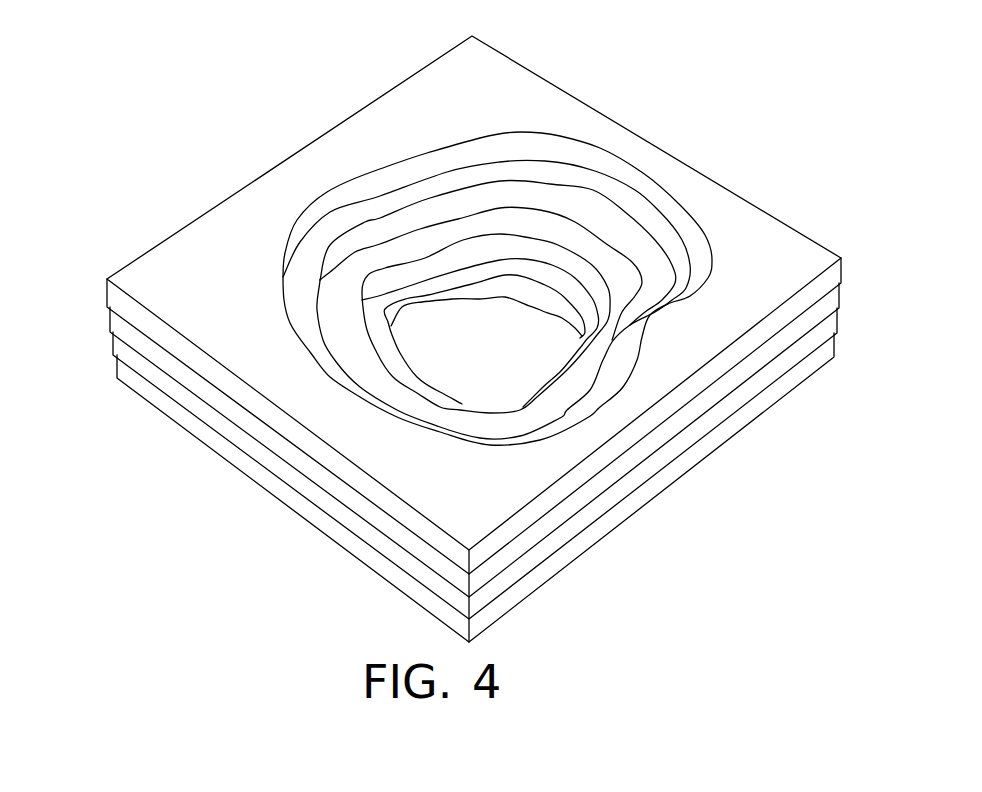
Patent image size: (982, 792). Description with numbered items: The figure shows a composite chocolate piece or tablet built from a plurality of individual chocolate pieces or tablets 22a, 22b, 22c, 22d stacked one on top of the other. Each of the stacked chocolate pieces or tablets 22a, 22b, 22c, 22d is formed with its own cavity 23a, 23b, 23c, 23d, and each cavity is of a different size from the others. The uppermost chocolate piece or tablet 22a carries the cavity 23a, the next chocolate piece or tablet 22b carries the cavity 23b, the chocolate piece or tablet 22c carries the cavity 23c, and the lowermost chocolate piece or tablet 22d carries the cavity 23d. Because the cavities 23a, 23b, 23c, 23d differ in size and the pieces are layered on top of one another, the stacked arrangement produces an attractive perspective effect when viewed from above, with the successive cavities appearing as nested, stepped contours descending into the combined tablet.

The chocolate piece or tablet 22a is at (107, 300).
The chocolate piece or tablet 22b is at (110, 322).
The chocolate piece or tablet 22c is at (113, 346).
The chocolate piece or tablet 22d is at (117, 370).
The cavity 23a is at (522, 150).
The cavity 23b is at (580, 207).
The cavity 23c is at (412, 274).
The cavity 23d is at (550, 308).